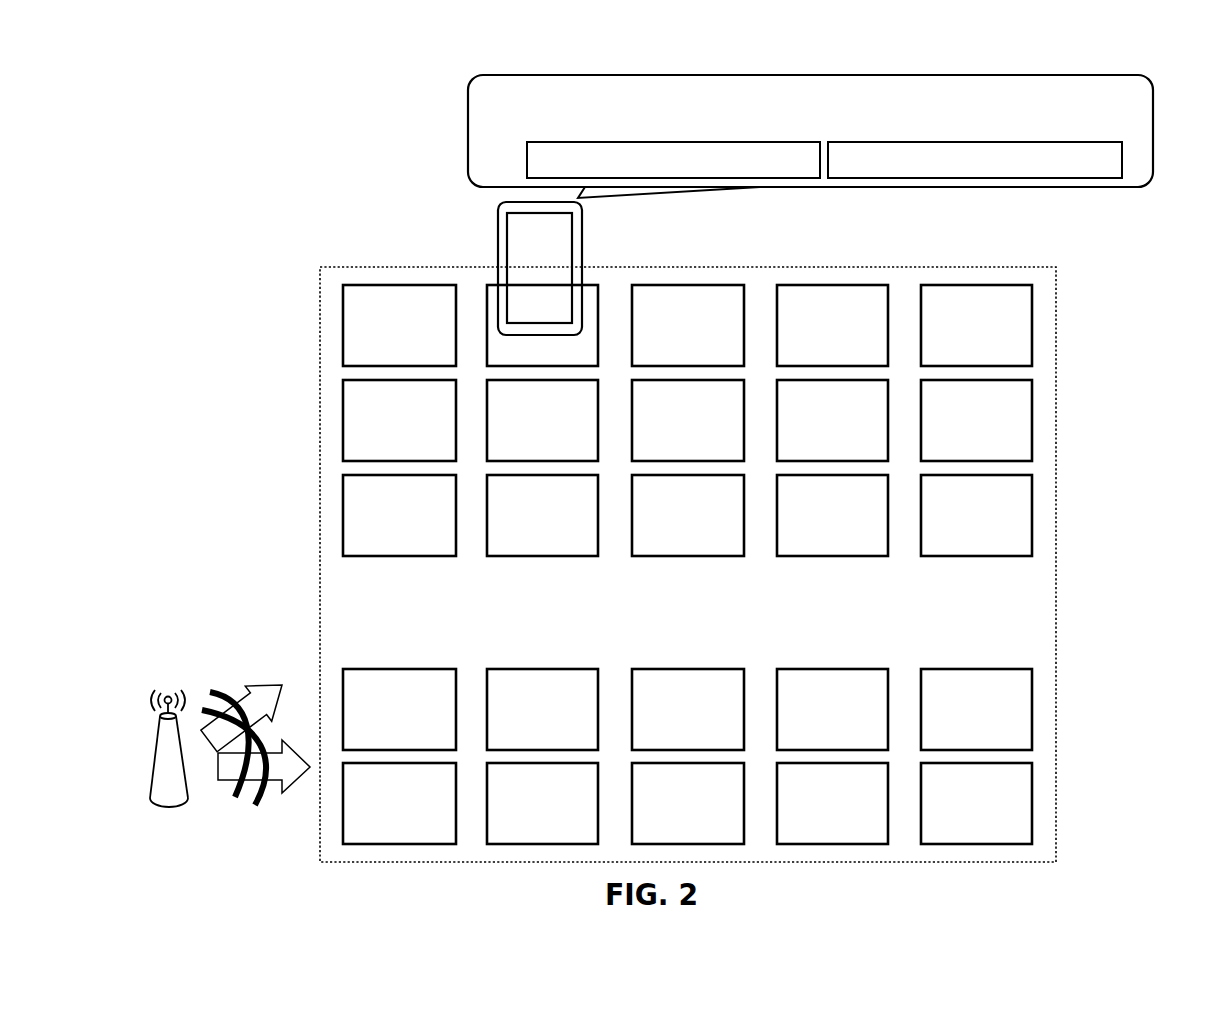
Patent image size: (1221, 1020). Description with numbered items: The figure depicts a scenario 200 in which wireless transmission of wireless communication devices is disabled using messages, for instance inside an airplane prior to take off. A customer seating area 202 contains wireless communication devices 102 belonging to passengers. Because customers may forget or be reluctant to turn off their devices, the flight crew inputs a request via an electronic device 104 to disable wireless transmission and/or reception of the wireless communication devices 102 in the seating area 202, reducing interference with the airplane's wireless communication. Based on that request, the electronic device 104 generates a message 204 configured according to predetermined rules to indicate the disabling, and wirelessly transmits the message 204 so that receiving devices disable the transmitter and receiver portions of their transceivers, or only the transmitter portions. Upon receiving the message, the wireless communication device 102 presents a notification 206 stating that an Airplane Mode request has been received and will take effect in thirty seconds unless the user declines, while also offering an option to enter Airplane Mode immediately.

The scenario 200 is at (293, 169).
The customer seating area 202 is at (1055, 266).
The wireless communication device 102 is at (558, 281).
The notification 206 is at (1153, 125).
The electronic device 104 is at (155, 745).
The message 204 is at (210, 692).